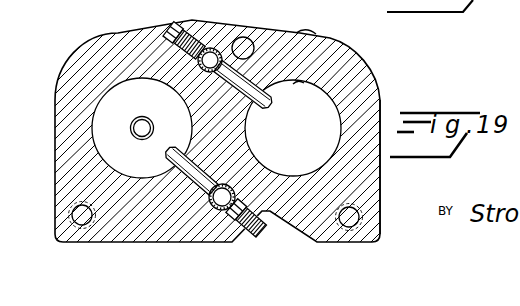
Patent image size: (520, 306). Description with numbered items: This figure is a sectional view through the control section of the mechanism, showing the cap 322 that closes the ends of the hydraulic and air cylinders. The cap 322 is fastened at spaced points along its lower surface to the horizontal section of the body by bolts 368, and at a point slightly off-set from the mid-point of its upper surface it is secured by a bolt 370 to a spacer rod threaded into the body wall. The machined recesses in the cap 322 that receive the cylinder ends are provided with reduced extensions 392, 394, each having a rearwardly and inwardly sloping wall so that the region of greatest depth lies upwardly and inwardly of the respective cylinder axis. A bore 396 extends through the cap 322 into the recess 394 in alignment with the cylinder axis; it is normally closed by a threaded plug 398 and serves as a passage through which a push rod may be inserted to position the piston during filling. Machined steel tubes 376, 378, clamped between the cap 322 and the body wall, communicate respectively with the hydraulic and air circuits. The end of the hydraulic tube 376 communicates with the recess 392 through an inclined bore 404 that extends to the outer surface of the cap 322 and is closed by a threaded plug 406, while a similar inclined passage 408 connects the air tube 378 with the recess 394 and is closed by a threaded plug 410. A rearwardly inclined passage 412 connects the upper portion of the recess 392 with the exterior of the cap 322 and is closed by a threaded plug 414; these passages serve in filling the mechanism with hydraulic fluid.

The cap 322 is at (367, 60).
The reduced extension 392 is at (329, 112).
The threaded plug 414 is at (305, 29).
The reduced extension 394 is at (93, 130).
The bore 396 is at (127, 122).
The threaded plug 398 is at (142, 118).
The inclined bore 404 is at (257, 109).
The rearwardly inclined passage 412 is at (298, 85).
The bolt 370 is at (249, 35).
The bolts 368 is at (55, 238).
The threaded plug 406 is at (168, 29).
The hydraulic tube 376 is at (196, 64).
The inclined passage 408 is at (163, 163).
The air tube 378 is at (232, 228).
The threaded plug 410 is at (261, 229).